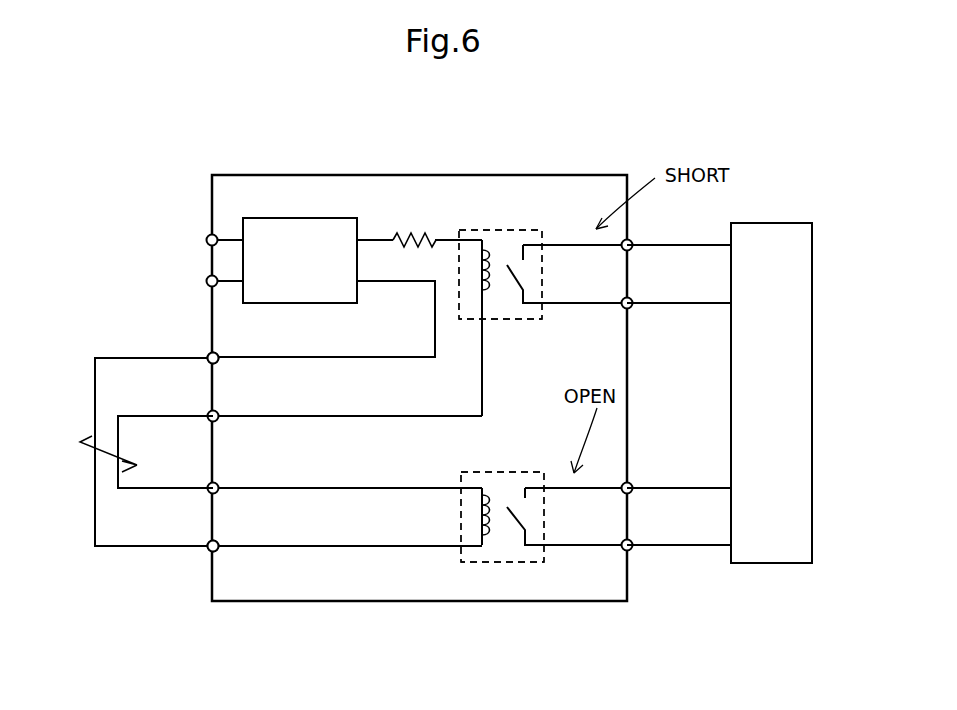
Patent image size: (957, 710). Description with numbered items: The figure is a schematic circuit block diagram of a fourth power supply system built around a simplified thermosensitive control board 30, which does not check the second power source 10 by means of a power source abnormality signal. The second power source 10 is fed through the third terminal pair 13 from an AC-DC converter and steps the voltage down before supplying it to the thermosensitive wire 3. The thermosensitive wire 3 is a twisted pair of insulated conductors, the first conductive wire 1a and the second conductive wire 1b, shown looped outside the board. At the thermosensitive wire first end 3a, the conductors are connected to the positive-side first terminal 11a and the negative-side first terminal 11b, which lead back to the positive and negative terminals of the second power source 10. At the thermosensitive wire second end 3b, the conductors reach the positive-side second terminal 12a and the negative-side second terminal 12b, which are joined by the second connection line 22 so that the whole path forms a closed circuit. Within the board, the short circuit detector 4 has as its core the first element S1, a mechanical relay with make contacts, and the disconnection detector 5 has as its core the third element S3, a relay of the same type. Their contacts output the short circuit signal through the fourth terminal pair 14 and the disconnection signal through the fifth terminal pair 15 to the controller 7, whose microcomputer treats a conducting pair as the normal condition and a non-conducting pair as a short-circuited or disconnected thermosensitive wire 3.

The first conductive wire 1a is at (152, 418).
The second conductive wire 1b is at (140, 358).
The thermosensitive wire 3 is at (68, 438).
The thermosensitive wire first end 3a is at (200, 350).
The thermosensitive wire second end 3b is at (206, 556).
The short circuit detector 4 is at (523, 218).
The disconnection detector 5 is at (503, 462).
The controller 7 is at (815, 332).
The second power source 10 is at (300, 218).
The positive-side first terminal 11a is at (218, 420).
The negative-side first terminal 11b is at (218, 362).
The positive-side second terminal 12a is at (218, 492).
The negative-side second terminal 12b is at (218, 550).
The third terminal pair 13 is at (197, 265).
The fourth terminal pair 14 is at (636, 313).
The fifth terminal pair 15 is at (634, 475).
The second connection line 22 is at (432, 549).
The thermosensitive control board 30 is at (262, 603).
The first element S1 is at (500, 230).
The third element S3 is at (500, 562).